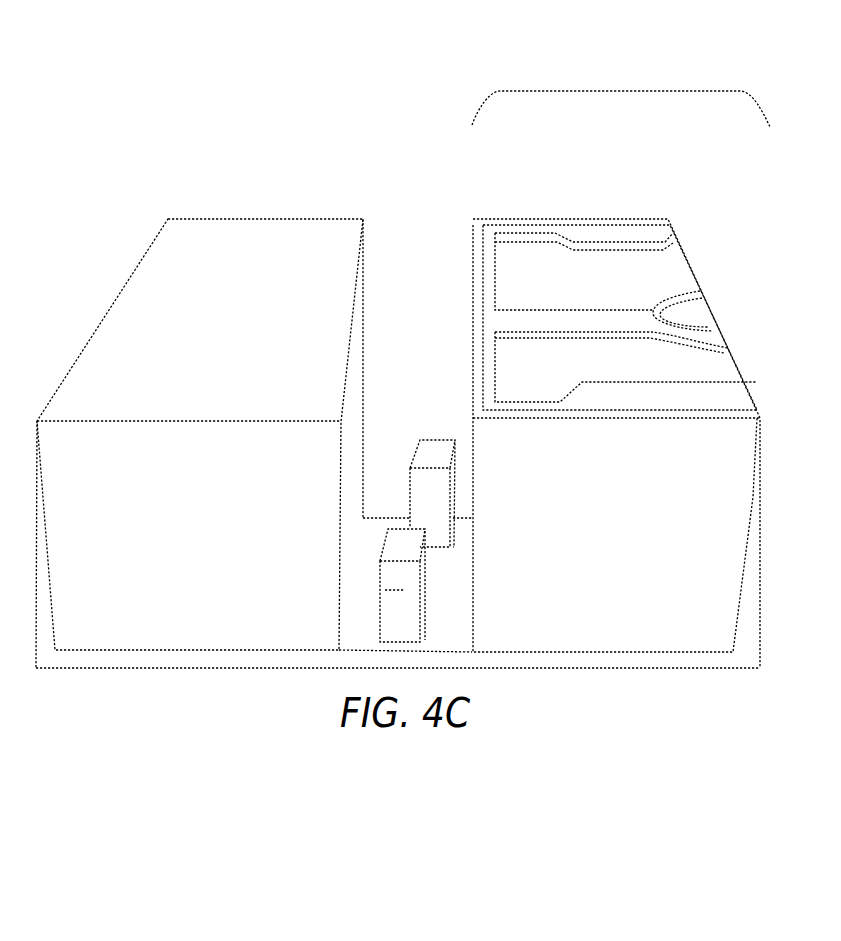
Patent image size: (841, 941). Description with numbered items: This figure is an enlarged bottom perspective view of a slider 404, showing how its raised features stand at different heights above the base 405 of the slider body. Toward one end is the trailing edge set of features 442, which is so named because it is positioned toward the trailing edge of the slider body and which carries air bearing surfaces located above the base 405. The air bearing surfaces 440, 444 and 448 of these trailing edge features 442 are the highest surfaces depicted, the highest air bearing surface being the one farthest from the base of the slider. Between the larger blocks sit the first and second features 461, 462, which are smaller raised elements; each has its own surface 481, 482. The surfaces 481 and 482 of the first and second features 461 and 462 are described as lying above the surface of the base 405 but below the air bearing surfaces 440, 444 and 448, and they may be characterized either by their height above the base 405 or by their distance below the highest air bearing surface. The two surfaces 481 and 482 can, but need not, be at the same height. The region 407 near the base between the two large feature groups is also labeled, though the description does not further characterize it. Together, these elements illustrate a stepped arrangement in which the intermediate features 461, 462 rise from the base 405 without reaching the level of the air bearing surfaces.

The slider 404 is at (244, 205).
The base 405 is at (562, 657).
The gap between housings 407 is at (400, 650).
The leading edge set of features 440 is at (583, 230).
The trailing edge set of features 442 is at (621, 91).
The air bearing surface 444 is at (603, 398).
The air bearing surface 448 is at (615, 320).
The first feature 461 is at (395, 590).
The second feature 462 is at (428, 495).
The surface of first feature 481 is at (413, 545).
The surface of second feature 482 is at (437, 458).